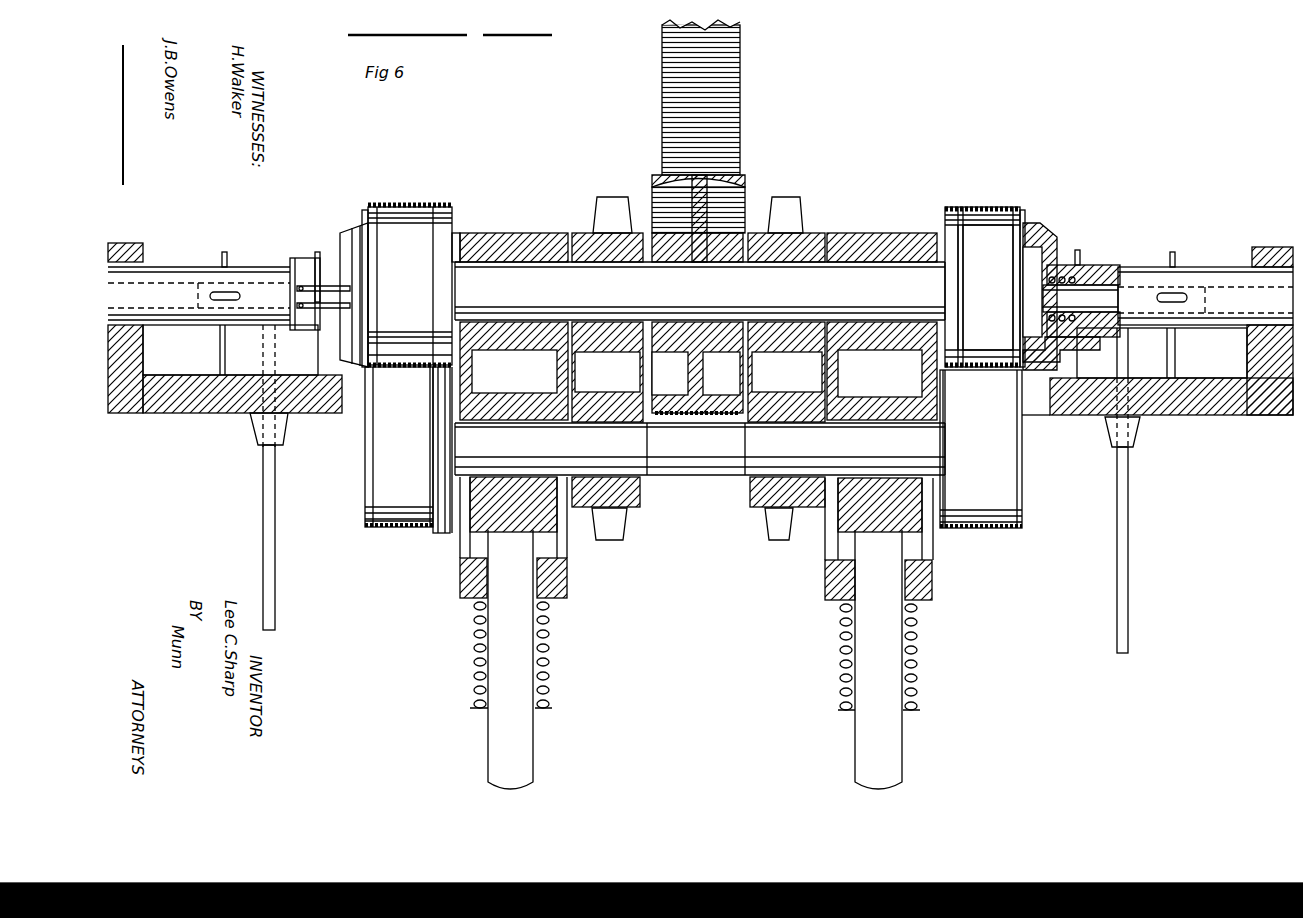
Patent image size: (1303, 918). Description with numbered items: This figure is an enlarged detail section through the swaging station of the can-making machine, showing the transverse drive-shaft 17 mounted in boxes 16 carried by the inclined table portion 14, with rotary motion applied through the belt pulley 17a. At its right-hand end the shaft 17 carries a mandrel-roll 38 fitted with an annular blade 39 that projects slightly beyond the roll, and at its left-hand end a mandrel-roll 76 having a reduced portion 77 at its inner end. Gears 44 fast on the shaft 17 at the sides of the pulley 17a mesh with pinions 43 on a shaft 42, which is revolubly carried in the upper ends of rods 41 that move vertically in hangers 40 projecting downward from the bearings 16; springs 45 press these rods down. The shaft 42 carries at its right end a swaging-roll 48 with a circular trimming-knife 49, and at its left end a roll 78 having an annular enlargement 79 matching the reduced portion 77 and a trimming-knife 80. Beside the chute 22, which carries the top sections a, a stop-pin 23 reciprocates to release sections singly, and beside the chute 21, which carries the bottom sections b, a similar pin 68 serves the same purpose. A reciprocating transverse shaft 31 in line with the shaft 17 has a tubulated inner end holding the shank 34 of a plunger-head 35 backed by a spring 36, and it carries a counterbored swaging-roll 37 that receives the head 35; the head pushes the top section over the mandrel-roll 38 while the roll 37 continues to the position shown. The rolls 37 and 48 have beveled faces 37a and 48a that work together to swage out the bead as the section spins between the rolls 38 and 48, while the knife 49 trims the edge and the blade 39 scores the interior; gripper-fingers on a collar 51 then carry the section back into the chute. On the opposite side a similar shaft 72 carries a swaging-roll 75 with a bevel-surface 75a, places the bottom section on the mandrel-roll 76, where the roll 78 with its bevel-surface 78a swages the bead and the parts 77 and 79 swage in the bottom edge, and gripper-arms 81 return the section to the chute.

The inclined major portion of the table 14 is at (1218, 398).
The boxes 16 is at (525, 233).
The drive-shaft 17 is at (492, 283).
The pulley 17a is at (725, 205).
The chute 21 is at (222, 352).
The chute 22 is at (1175, 352).
The stop-pin 23 is at (1130, 552).
The transverse shaft 31 is at (1205, 288).
The shank 34 is at (1090, 297).
The plunger-head 35 is at (1035, 272).
The spring 36 is at (1078, 335).
The swaging-roll 37 is at (1048, 236).
The beveled face 37a is at (1028, 222).
The mandrel-roll 38 is at (988, 287).
The annular blade 39 is at (962, 335).
The hangers 40 is at (567, 572).
The rods 41 is at (535, 736).
The shaft 42 is at (696, 455).
The pinions 43 is at (612, 532).
The gears 44 is at (607, 215).
The springs 45 is at (552, 656).
The swaging-roll 48 is at (990, 530).
The beveled face 48a is at (1022, 526).
The circular trimming-knife 49 is at (944, 530).
The collar 51 is at (1100, 265).
The pin 68 is at (277, 598).
The transverse shaft 72 is at (248, 280).
The swaging-roll 75 is at (352, 238).
The bevel-surface 75a is at (366, 210).
The mandrel-roll 76 is at (410, 286).
The reduced portion 77 is at (460, 233).
The roll 78 is at (399, 447).
The bevel-surface 78a is at (385, 528).
The annular enlargement 79 is at (440, 533).
The trimming-knife 80 is at (452, 533).
The gripper-arms 81 is at (335, 288).
The top section of the can a is at (985, 207).
The bottom section of the can b is at (398, 205).